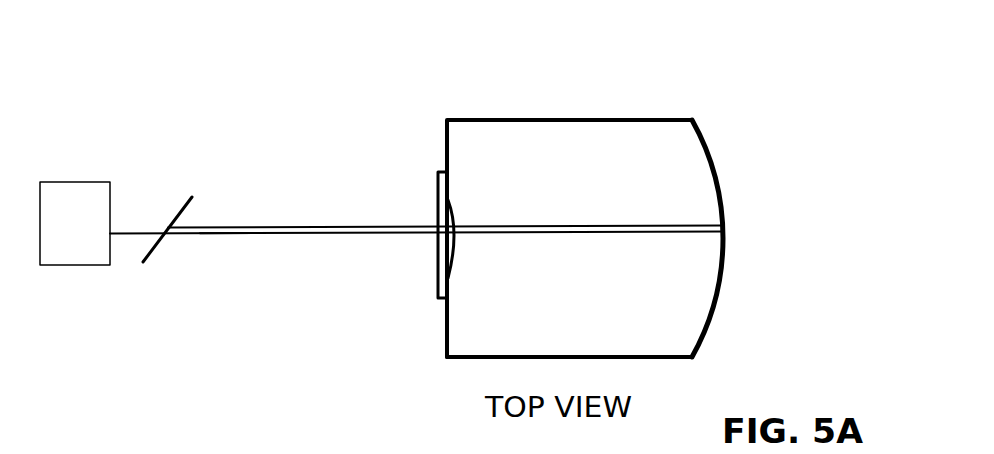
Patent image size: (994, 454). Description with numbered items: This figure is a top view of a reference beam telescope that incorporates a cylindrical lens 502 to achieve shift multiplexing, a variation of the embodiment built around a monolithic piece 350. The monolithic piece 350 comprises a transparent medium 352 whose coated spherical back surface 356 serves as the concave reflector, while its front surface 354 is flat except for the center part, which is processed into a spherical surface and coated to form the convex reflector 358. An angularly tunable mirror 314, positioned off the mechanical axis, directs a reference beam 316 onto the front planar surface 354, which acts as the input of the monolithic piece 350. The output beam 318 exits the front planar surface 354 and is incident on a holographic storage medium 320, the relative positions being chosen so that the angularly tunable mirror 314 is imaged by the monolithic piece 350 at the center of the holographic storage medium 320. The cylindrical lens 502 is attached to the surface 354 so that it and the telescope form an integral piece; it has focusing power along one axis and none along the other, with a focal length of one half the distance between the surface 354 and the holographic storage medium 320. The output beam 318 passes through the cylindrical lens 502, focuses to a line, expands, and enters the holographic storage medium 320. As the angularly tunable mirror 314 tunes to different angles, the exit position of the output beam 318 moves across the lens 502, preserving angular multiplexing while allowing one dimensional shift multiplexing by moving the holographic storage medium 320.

The holographic storage medium 320 is at (72, 182).
The reference beam 316 is at (278, 227).
The output beam 318 is at (233, 234).
The angularly tunable mirror 314 is at (142, 262).
The cylindrical lens 502 is at (438, 178).
The convex reflector 358 is at (438, 260).
The transparent medium 352 is at (548, 118).
The spherical back surface 356 is at (723, 232).
The front surface 354 is at (447, 353).
The monolithic piece 350 is at (753, 98).